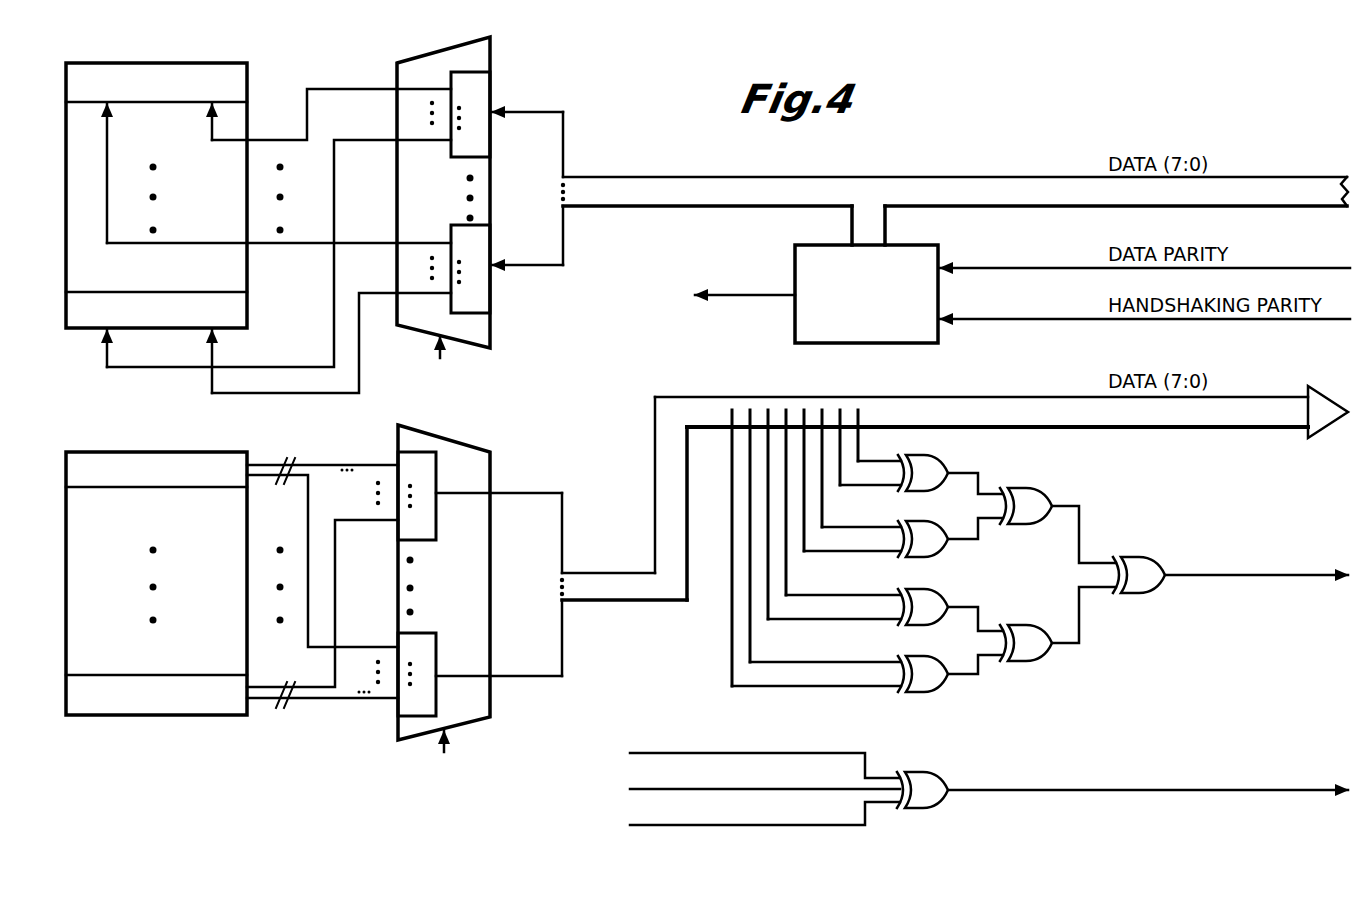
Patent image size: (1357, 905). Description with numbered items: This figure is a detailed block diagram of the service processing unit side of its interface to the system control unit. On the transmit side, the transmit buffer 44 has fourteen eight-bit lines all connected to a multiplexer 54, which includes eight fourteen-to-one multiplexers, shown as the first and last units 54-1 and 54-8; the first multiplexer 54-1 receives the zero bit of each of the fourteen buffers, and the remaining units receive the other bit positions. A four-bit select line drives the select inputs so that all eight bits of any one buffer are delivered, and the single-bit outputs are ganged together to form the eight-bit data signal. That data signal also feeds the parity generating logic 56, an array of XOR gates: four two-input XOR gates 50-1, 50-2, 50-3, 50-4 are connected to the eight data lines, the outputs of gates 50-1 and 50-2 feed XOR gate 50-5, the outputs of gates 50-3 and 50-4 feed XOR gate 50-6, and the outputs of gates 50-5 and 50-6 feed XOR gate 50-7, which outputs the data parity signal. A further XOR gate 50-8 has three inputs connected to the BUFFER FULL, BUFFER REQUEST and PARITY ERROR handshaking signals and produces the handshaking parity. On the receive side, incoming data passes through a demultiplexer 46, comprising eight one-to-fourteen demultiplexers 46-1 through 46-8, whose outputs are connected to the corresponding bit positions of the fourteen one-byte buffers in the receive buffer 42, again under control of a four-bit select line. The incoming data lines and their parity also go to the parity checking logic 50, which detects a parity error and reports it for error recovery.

The receive buffer 42 is at (232, 63).
The transmit buffer 44 is at (233, 715).
The demultiplexer 46 is at (484, 207).
The demultiplexer 46-1 is at (492, 88).
The demultiplexer 46-8 is at (492, 295).
The parity checking logic 50 is at (925, 343).
The XOR gate 50-1 is at (928, 456).
The XOR gate 50-2 is at (912, 562).
The XOR gate 50-3 is at (935, 599).
The XOR gate 50-4 is at (930, 693).
The XOR gate 50-5 is at (1040, 487).
The XOR gate 50-6 is at (1037, 661).
The XOR gate 50-7 is at (1145, 598).
The XOR gate 50-8 is at (938, 808).
The multiplexer 54 is at (447, 600).
The multiplexer 54-1 is at (398, 458).
The multiplexer 54-8 is at (398, 708).
The parity generating logic 56 is at (1040, 564).